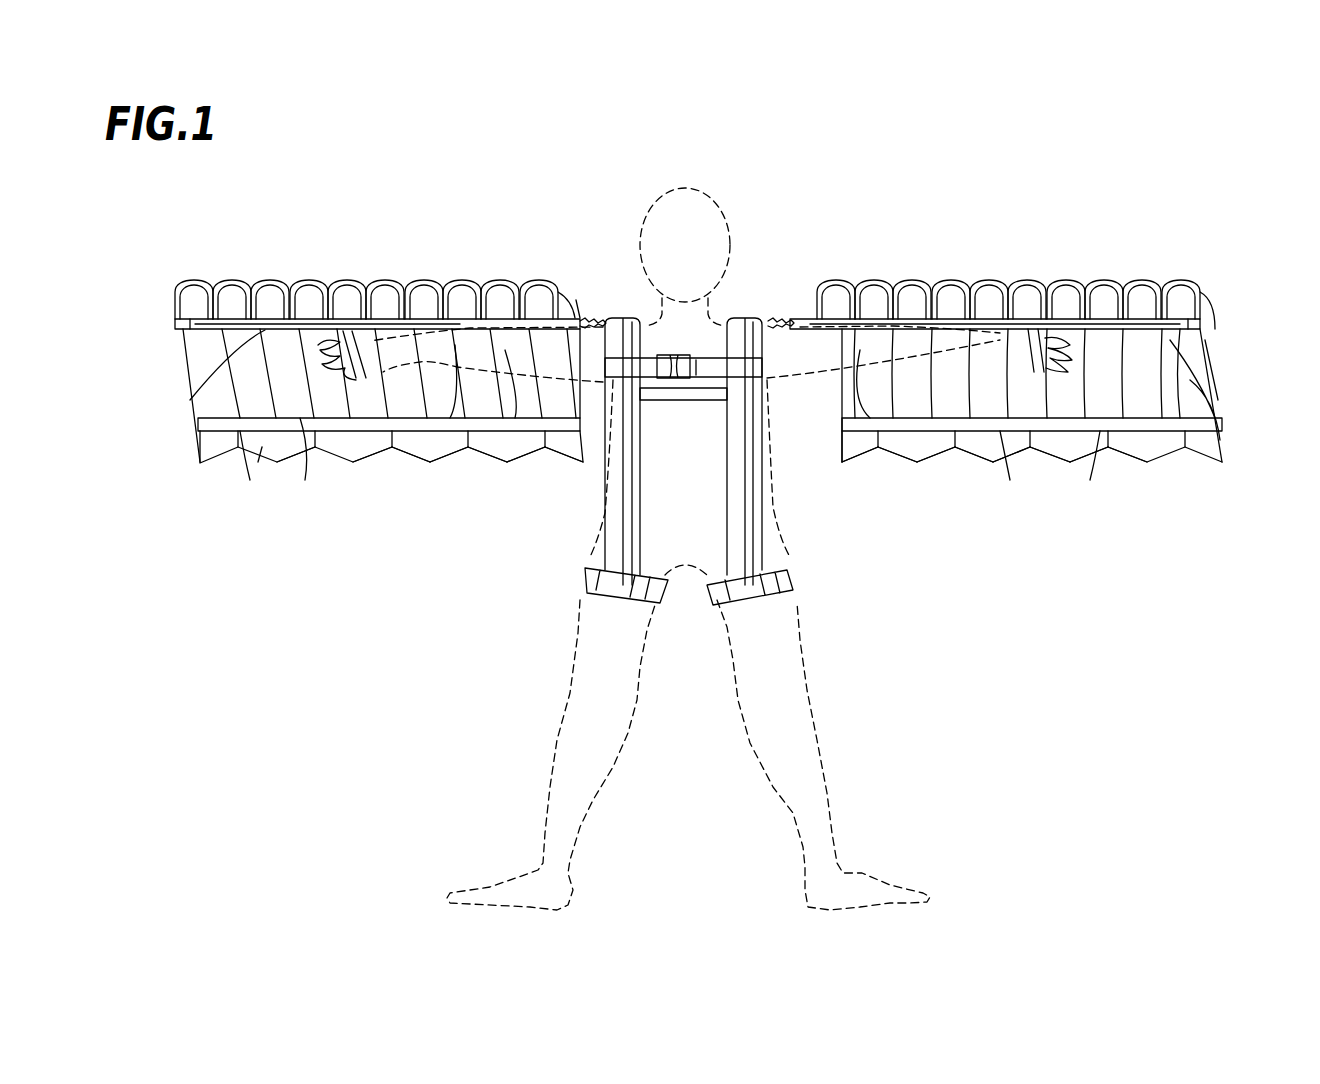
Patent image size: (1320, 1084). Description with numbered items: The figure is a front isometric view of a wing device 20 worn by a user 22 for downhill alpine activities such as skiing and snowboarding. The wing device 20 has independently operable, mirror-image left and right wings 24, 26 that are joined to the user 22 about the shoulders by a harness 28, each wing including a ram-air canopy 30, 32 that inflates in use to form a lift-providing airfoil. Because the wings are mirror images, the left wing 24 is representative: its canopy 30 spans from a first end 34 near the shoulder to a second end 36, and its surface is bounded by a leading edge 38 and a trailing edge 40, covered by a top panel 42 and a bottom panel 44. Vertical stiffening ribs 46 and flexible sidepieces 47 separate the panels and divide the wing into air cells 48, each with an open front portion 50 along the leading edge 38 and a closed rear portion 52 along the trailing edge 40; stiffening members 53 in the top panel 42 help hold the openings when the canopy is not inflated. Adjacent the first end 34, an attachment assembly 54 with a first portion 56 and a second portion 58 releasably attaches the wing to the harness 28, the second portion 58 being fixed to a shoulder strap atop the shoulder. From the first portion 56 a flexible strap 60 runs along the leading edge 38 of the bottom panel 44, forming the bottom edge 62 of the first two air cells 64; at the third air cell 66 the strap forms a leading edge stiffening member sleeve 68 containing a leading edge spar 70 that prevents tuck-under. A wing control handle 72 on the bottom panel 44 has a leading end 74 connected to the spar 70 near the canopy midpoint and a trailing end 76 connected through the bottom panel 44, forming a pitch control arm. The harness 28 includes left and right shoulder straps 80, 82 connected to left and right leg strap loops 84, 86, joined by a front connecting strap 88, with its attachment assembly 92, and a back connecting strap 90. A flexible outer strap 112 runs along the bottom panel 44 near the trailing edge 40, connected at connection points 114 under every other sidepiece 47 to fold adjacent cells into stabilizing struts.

The wing device 20 is at (908, 172).
The user 22 is at (695, 205).
The left wing 24 is at (1052, 236).
The right wing 26 is at (348, 228).
The harness 28 is at (762, 445).
The ram-air canopy 30 is at (1085, 435).
The ram-air canopy 32 is at (377, 447).
The first end 34 is at (576, 300).
The second end 36 is at (188, 358).
The leading edge 38 is at (305, 290).
The trailing edge 40 is at (207, 466).
The top panel 42 is at (418, 290).
The bottom panel 44 is at (193, 395).
The vertical stiffening ribs 46 is at (562, 290).
The flexible sidepieces 47 is at (500, 290).
The air cells 48 is at (238, 290).
The open front portion 50 is at (277, 290).
The closed rear portion 52 is at (297, 447).
The stiffening members 53 is at (343, 290).
The attachment assembly 54 is at (598, 318).
The first portion 56 is at (795, 330).
The second portion 58 is at (790, 375).
The flexible strap 60 is at (513, 453).
The bottom edge 62 is at (843, 445).
The air cells 64 is at (890, 270).
The air cell 66 is at (924, 313).
The leading edge stiffening member sleeve 68 is at (172, 333).
The leading edge spar 70 is at (210, 407).
The wing control handle 72 is at (340, 447).
The leading end 74 is at (1018, 440).
The trailing end 76 is at (410, 447).
The left shoulder strap 80 is at (733, 430).
The right shoulder strap 82 is at (578, 460).
The left leg strap loop 84 is at (797, 595).
The right leg strap loop 86 is at (585, 593).
The front connecting strap 88 is at (656, 357).
The back connecting strap 90 is at (680, 395).
The attachment assembly 92 is at (680, 358).
The flexible outer strap 112 is at (260, 453).
The connection points 114 is at (473, 453).